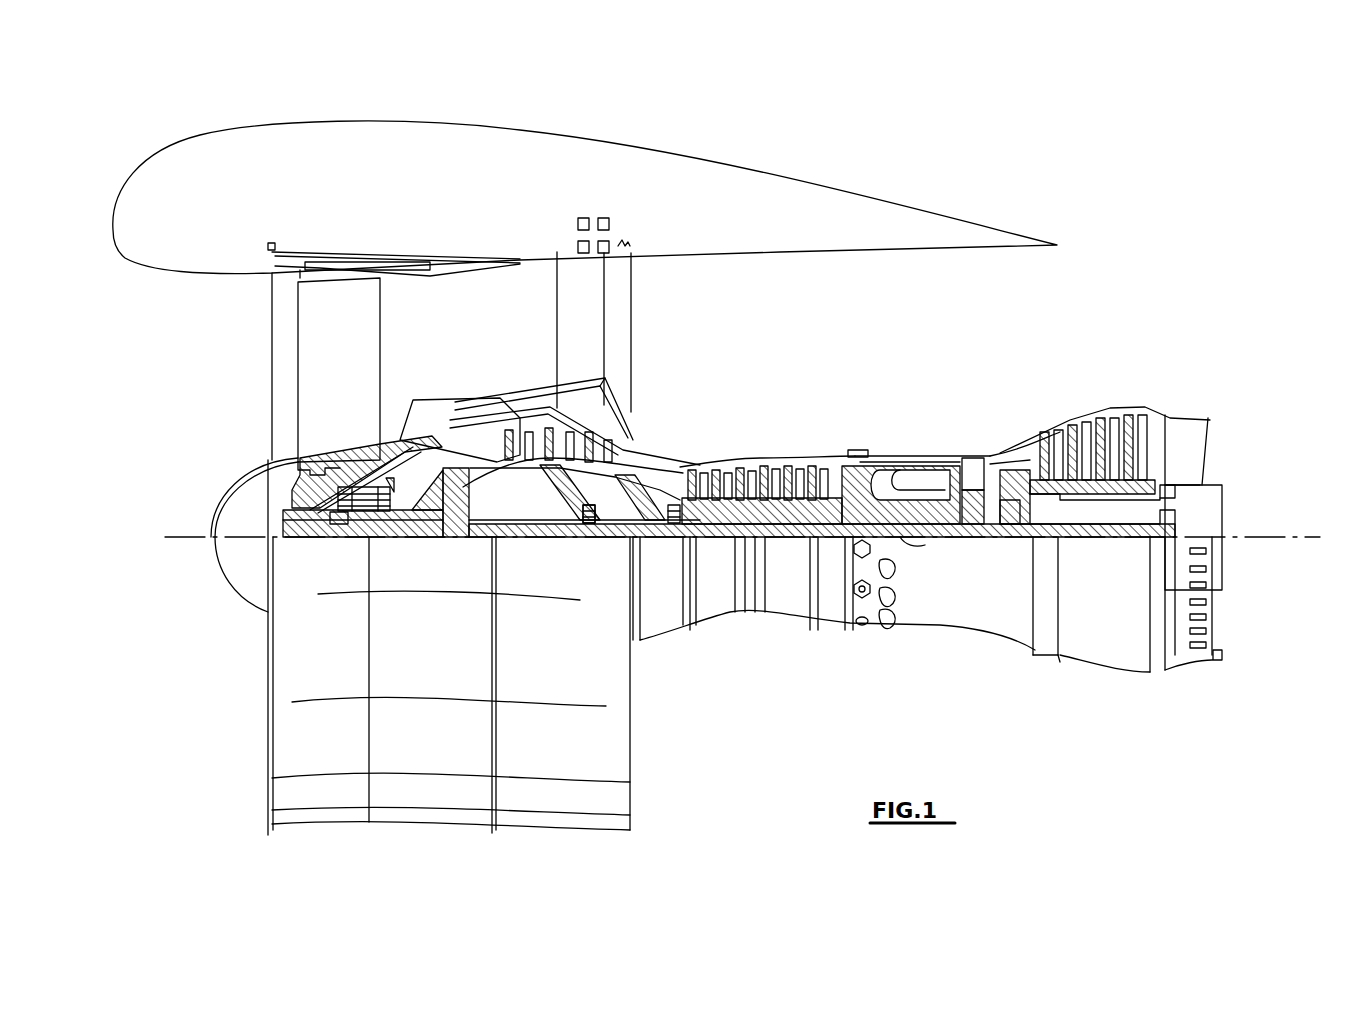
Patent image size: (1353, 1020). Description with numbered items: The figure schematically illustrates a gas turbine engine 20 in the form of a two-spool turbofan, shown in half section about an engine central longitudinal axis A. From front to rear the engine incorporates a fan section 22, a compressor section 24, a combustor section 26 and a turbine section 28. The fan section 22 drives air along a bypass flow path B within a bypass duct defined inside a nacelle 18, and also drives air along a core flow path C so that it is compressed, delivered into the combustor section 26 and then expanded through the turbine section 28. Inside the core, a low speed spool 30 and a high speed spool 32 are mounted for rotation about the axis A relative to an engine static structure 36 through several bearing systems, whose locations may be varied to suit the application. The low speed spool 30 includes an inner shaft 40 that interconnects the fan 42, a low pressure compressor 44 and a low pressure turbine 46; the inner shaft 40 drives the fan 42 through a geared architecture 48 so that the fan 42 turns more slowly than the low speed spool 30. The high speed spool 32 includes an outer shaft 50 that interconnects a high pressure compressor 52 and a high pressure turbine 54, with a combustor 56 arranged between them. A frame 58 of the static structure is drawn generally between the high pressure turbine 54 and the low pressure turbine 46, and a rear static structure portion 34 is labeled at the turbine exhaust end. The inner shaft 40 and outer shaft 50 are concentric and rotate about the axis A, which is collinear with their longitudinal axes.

The nacelle 18 is at (582, 165).
The gas turbine engine 20 is at (1090, 177).
The fan section 22 is at (478, 222).
The compressor section 24 is at (888, 372).
The combustor section 26 is at (983, 372).
The turbine section 28 is at (1165, 372).
The low speed spool 30 is at (790, 545).
The high speed spool 32 is at (834, 466).
The engine static structure 34 is at (1110, 500).
The engine static structure 36 is at (830, 632).
The inner shaft 40 is at (650, 540).
The fan 42 is at (352, 379).
The low pressure compressor 44 is at (565, 435).
The low pressure turbine 46 is at (1097, 430).
The geared architecture 48 is at (458, 525).
The outer shaft 50 is at (917, 538).
The high pressure compressor 52 is at (760, 490).
The high pressure turbine 54 is at (973, 452).
The combustor 56 is at (905, 472).
The mid-turbine frame 58 is at (1012, 442).